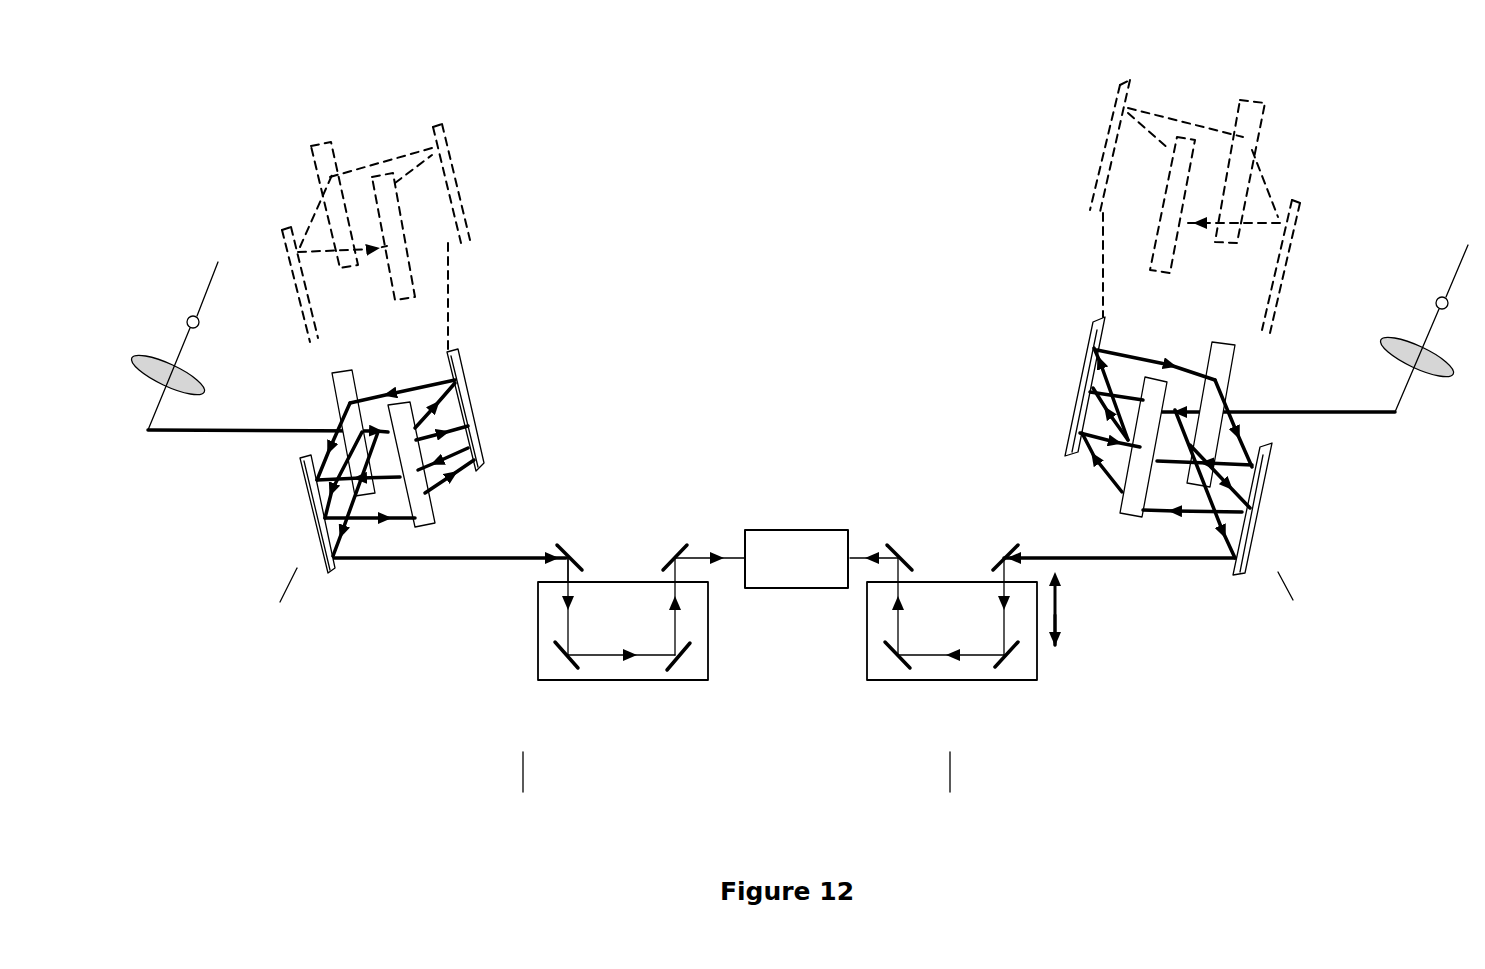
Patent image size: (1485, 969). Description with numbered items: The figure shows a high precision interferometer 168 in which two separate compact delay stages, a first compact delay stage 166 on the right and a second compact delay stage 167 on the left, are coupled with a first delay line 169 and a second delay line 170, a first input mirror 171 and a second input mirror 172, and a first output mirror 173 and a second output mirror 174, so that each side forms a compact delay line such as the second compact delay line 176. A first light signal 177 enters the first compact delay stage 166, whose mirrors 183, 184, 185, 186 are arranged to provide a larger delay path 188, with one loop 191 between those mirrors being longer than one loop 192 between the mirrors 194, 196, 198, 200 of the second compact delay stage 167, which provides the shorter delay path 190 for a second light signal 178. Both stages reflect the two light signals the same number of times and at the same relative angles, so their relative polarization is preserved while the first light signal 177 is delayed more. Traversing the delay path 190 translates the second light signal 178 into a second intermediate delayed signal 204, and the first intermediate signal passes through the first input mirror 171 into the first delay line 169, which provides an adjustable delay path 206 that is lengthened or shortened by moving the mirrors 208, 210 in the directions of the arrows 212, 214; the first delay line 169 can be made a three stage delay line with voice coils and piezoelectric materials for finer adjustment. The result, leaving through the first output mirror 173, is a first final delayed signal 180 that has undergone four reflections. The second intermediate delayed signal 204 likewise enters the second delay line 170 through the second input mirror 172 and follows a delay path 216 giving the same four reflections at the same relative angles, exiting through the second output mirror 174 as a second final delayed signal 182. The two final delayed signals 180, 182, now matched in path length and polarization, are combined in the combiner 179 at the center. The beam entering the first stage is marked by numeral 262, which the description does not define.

The high precision interferometer 168 is at (193, 52).
The second compact delay stage 167 is at (357, 542).
The first compact delay stage 166 is at (1278, 538).
The second light signal 178 is at (198, 310).
The first light signal 177 is at (1448, 282).
The mirror of second compact delay stage 198 is at (333, 400).
The mirror of second compact delay stage 194 is at (423, 525).
The mirror of second compact delay stage 196 is at (481, 423).
The mirror of second compact delay stage 200 is at (307, 507).
The second delay path 190 is at (403, 382).
The loop of second compact delay stage 192 is at (340, 247).
The mirror of first compact delay stage 184 is at (1072, 407).
The mirror of first compact delay stage 183 is at (1130, 517).
The mirror of first compact delay stage 185 is at (1232, 378).
The mirror of first compact delay stage 186 is at (1265, 497).
The first delay path 188 is at (1155, 357).
The loop of first compact delay stage 191 is at (1233, 222).
The second intermediate delayed signal 204 is at (552, 555).
The second output mirror 174 is at (568, 543).
The second delay line 170 is at (538, 647).
The second input mirror 172 is at (683, 545).
The second final delayed signal 182 is at (718, 548).
The combiner 179 is at (796, 559).
The delay path of second delay line 216 is at (568, 628).
The first final delayed signal 180 is at (867, 553).
The first output mirror 173 is at (897, 547).
The first delay line 169 is at (1022, 680).
The mirror 208 is at (888, 647).
The mirror 210 is at (1017, 647).
The first input mirror 171 is at (1005, 552).
The input beam 262 is at (1017, 552).
The adjustable delay path 206 is at (898, 628).
The arrow 214 is at (1065, 588).
The arrow 212 is at (1065, 642).
The second compact delay line 176 is at (523, 788).